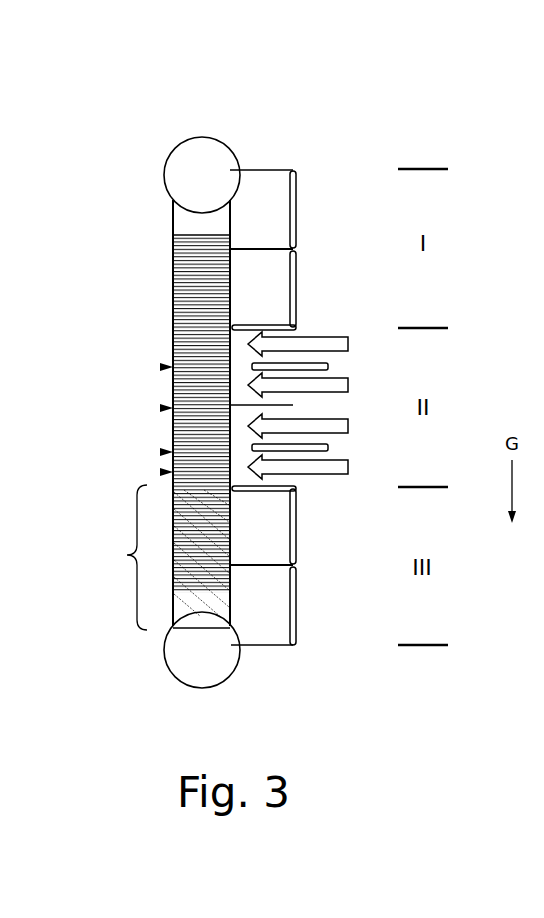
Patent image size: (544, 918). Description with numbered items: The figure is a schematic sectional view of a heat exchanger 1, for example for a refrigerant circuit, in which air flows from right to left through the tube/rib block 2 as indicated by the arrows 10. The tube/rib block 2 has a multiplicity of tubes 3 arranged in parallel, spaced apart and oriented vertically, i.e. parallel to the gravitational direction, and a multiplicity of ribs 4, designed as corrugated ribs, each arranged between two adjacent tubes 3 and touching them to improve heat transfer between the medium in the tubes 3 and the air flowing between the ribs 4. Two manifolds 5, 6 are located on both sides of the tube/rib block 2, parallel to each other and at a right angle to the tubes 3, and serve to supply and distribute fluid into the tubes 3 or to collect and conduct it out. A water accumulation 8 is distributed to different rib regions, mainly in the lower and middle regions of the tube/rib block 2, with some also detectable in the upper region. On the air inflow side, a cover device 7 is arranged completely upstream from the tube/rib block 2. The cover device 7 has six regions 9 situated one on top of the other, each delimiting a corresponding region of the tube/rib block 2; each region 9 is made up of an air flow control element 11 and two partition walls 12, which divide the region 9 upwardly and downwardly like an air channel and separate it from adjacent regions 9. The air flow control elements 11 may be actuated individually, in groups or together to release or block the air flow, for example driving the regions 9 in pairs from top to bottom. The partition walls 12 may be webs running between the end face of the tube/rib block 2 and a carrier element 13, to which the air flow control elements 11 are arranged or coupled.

The heat exchanger 1 is at (314, 120).
The tube/rib block 2 is at (173, 250).
The tubes 3 is at (173, 320).
The ribs 4 is at (173, 390).
The manifold 5 is at (200, 163).
The manifold 6 is at (180, 658).
The cover device 7 is at (280, 156).
The water accumulation 8 is at (161, 367).
The regions 9 is at (240, 202).
The arrows 10 is at (348, 344).
The air flow control elements 11 is at (296, 232).
The partition walls 12 is at (250, 168).
The carrier element 13 is at (291, 167).